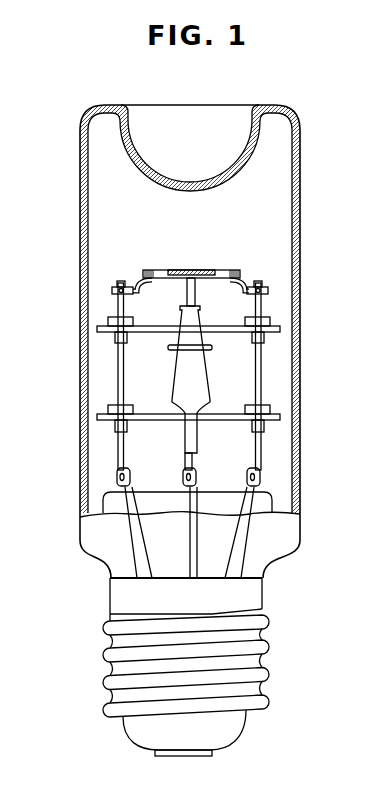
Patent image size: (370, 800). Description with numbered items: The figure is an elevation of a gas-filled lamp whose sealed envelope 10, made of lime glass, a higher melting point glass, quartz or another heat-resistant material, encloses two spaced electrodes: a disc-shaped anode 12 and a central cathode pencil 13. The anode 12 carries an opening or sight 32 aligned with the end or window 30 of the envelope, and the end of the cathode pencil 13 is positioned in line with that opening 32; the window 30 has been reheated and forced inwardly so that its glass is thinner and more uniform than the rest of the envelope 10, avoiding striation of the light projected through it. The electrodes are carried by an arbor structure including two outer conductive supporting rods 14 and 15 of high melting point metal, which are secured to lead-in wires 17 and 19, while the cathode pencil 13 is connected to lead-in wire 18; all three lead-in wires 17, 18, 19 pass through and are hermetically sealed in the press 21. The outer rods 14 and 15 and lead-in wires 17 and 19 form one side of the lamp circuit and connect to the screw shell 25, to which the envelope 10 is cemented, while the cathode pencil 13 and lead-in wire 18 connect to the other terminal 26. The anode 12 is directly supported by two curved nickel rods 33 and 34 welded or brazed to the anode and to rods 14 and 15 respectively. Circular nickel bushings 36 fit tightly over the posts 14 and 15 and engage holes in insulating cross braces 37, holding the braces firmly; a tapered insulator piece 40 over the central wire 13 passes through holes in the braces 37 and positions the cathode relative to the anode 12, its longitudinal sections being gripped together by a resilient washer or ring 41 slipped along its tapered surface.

The sealed envelope 10 is at (298, 366).
The anode 12 is at (208, 270).
The cathode pencil 13 is at (195, 294).
The supporting rod 14 is at (118, 372).
The supporting rod 15 is at (261, 377).
The lead-in wire 17 is at (129, 490).
The lead-in wire 18 is at (196, 490).
The lead-in wire 19 is at (261, 490).
The press 21 is at (103, 497).
The screw shell 25 is at (255, 648).
The terminal 26 is at (185, 757).
The window 30 is at (192, 187).
The opening 32 is at (187, 270).
The curved nickel rod 33 is at (137, 287).
The curved nickel rod 34 is at (244, 287).
The circular bushing 36 is at (112, 318).
The insulating cross brace 37 is at (152, 333).
The insulator piece 40 is at (203, 377).
The resilient ring 41 is at (211, 348).